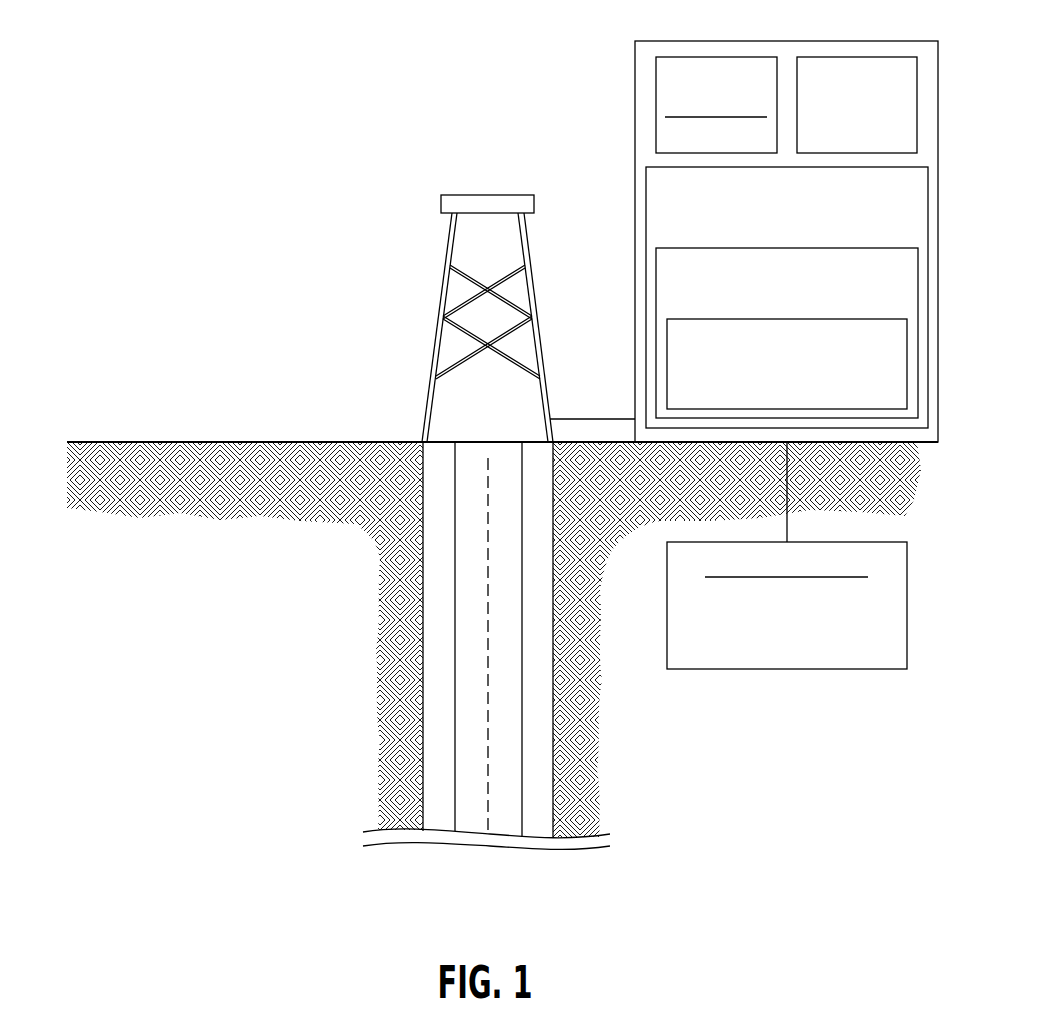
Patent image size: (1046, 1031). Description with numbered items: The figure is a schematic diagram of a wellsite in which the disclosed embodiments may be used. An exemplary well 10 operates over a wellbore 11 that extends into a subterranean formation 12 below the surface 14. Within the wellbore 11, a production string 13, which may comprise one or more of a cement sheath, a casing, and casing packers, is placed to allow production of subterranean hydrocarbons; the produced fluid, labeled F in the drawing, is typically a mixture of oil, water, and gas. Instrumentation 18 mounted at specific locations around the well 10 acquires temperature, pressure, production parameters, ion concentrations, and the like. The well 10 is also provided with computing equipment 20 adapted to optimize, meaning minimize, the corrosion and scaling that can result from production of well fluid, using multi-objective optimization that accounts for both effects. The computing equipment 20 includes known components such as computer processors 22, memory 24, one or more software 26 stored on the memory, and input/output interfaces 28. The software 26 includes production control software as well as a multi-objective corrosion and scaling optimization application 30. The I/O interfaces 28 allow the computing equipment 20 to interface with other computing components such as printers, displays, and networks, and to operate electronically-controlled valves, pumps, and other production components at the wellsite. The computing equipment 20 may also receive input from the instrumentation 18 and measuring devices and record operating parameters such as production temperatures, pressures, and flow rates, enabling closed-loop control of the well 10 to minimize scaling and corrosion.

The well 10 is at (528, 318).
The wellbore 11 is at (538, 639).
The subterranean formation 12 is at (272, 559).
The production string 13 is at (549, 639).
The surface 14 is at (502, 415).
The produced fluid flow F is at (558, 645).
The instrumentation 18 is at (844, 670).
The computing equipment 20 is at (786, 223).
The computer processors 22 is at (843, 133).
The memory 24 is at (773, 234).
The software 26 is at (773, 307).
The input/output (I/O) interfaces 28 is at (730, 146).
The multi-objective corrosion and scaling optimization application 30 is at (773, 404).